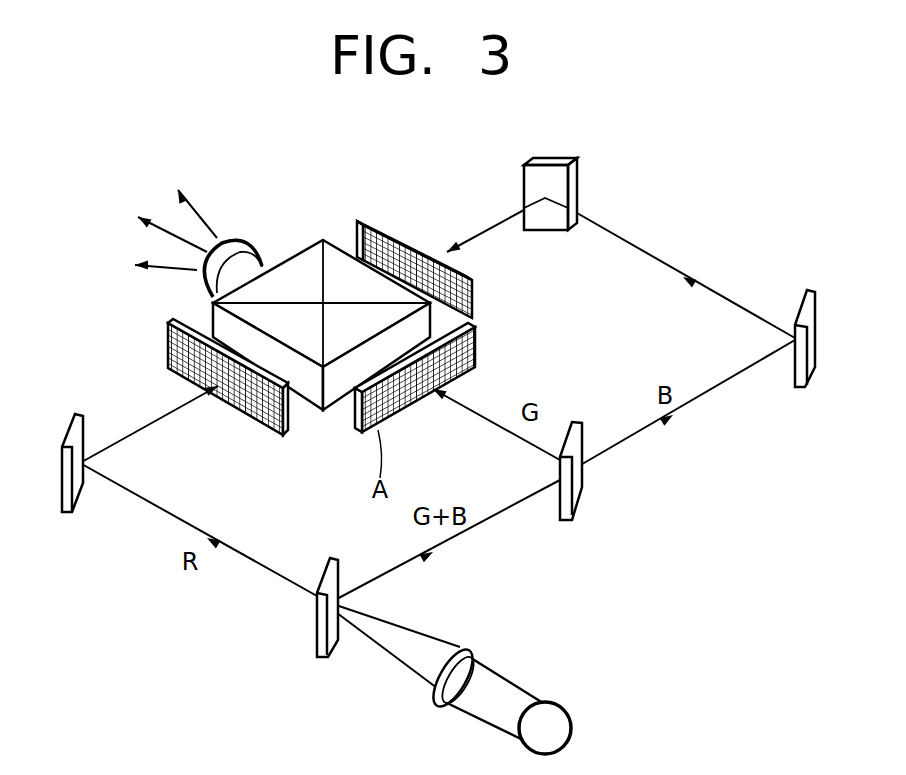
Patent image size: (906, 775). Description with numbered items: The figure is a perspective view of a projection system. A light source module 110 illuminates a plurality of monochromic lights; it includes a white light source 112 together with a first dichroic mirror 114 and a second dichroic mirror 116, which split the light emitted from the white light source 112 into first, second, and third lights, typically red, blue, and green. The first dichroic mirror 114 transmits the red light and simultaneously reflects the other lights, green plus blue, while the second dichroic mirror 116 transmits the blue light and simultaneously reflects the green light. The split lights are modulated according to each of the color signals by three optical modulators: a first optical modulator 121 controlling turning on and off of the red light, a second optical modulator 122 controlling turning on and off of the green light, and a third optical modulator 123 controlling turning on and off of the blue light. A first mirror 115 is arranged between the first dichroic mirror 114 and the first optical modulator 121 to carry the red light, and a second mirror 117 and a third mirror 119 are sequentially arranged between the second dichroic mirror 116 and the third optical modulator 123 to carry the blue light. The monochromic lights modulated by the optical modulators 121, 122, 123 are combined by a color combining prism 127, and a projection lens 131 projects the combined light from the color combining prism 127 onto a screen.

The light source module 110 is at (552, 553).
The white light source 112 is at (567, 713).
The first dichroic mirror 114 is at (335, 602).
The first mirror 115 is at (75, 414).
The second dichroic mirror 116 is at (558, 512).
The second mirror 117 is at (810, 290).
The third mirror 119 is at (552, 165).
The first optical modulator 121 is at (170, 333).
The second optical modulator 122 is at (475, 357).
The third optical modulator 123 is at (381, 222).
The color combining prism 127 is at (310, 264).
The projection lens 131 is at (240, 240).